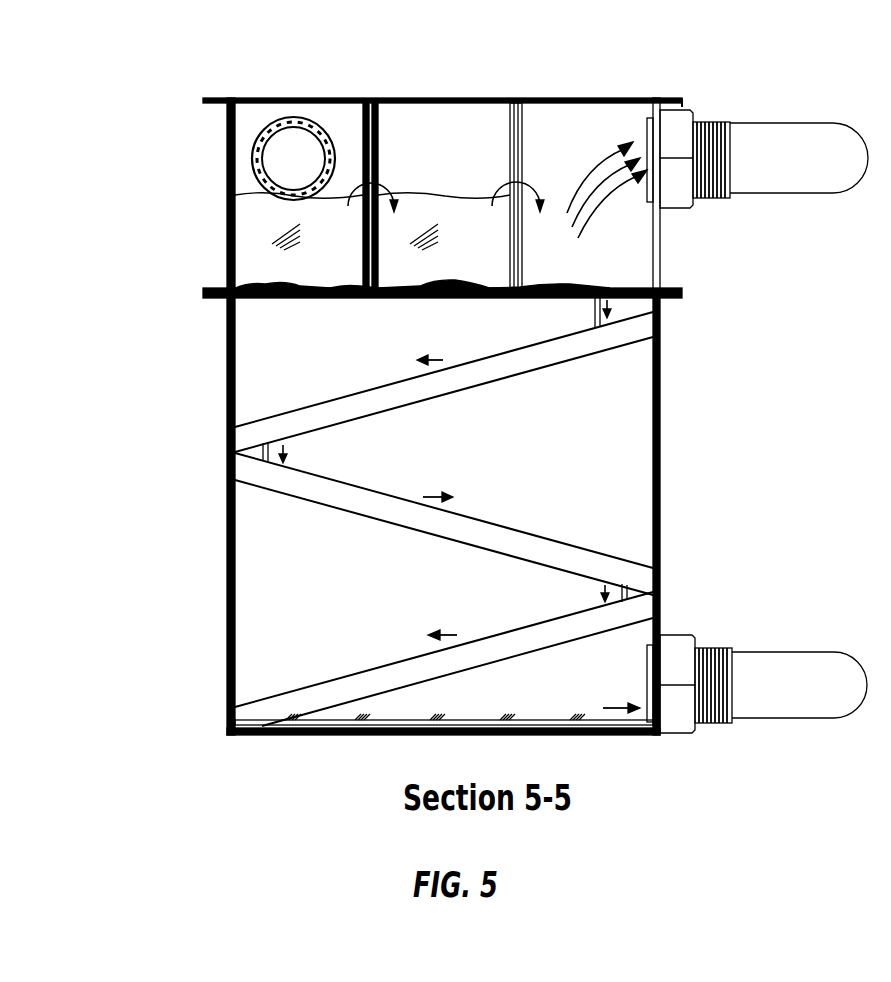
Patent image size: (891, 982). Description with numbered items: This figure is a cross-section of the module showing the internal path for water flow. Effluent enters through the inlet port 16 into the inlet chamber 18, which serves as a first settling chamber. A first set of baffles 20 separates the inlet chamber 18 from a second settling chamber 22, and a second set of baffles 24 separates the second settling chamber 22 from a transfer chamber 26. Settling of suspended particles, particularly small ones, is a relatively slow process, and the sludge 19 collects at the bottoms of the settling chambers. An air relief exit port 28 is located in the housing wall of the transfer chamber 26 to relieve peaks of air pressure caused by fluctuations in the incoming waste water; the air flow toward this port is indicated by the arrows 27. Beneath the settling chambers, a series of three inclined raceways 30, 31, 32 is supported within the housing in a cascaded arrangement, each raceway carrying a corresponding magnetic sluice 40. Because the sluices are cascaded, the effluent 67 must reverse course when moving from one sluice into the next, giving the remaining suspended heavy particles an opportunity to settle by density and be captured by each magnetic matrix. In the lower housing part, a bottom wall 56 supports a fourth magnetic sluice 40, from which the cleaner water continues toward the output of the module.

The inlet port 16 is at (306, 170).
The inlet chamber 18 is at (335, 115).
The sludge 19 is at (436, 298).
The first set of baffles 20 is at (380, 110).
The second settling chamber 22 is at (442, 140).
The second set of baffles 24 is at (520, 123).
The transfer chamber 26 is at (632, 110).
The flow arrows 27 is at (625, 143).
The air relief exit port 28 is at (743, 147).
The inclined raceway 30 is at (445, 383).
The inclined raceway 31 is at (497, 537).
The inclined raceway 32 is at (472, 655).
The magnetic sluice 40 is at (543, 723).
The bottom wall 56 is at (345, 723).
The effluent 67 is at (393, 190).